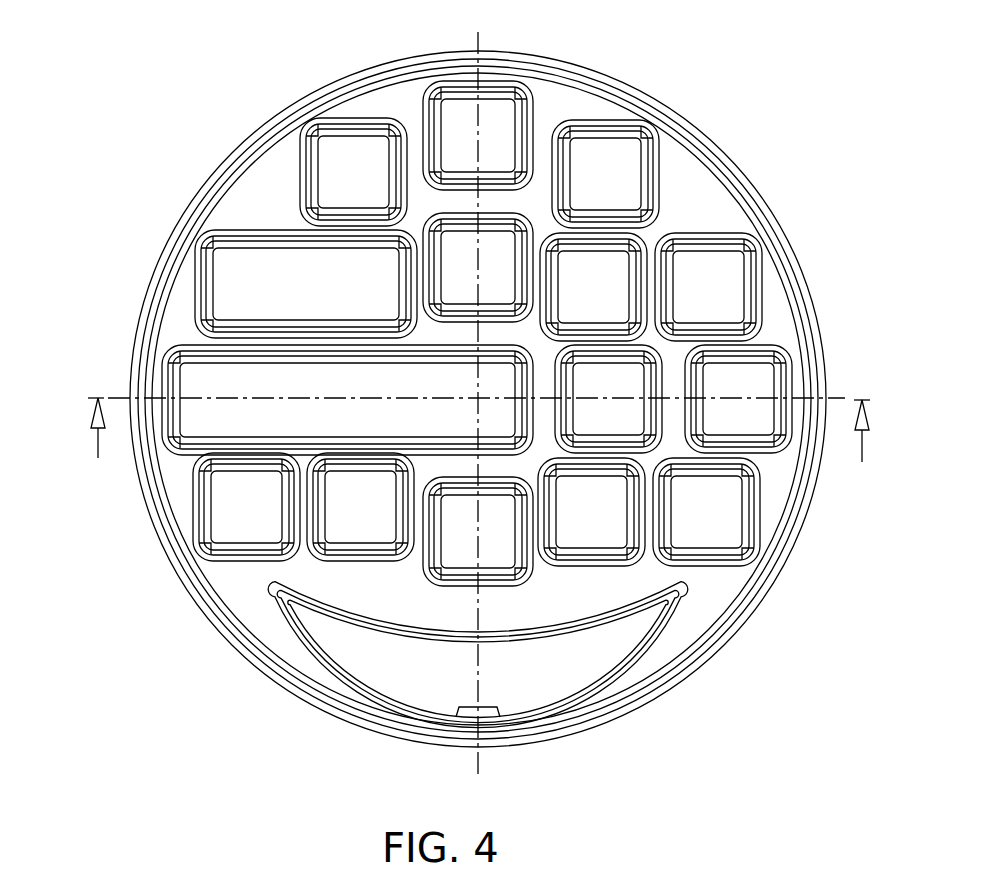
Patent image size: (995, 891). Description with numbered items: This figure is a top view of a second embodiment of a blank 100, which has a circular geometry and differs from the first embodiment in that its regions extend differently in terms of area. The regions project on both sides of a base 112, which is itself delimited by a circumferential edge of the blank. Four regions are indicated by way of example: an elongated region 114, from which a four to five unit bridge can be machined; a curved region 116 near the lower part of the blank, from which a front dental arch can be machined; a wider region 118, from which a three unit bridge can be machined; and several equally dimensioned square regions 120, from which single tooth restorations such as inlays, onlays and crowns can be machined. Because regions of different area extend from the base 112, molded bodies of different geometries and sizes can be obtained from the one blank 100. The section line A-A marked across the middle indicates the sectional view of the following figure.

The blank 100 is at (190, 149).
The base 112 is at (674, 637).
The region 114 is at (193, 417).
The region 116 is at (505, 685).
The region 118 is at (238, 290).
The regions 120 is at (718, 518).